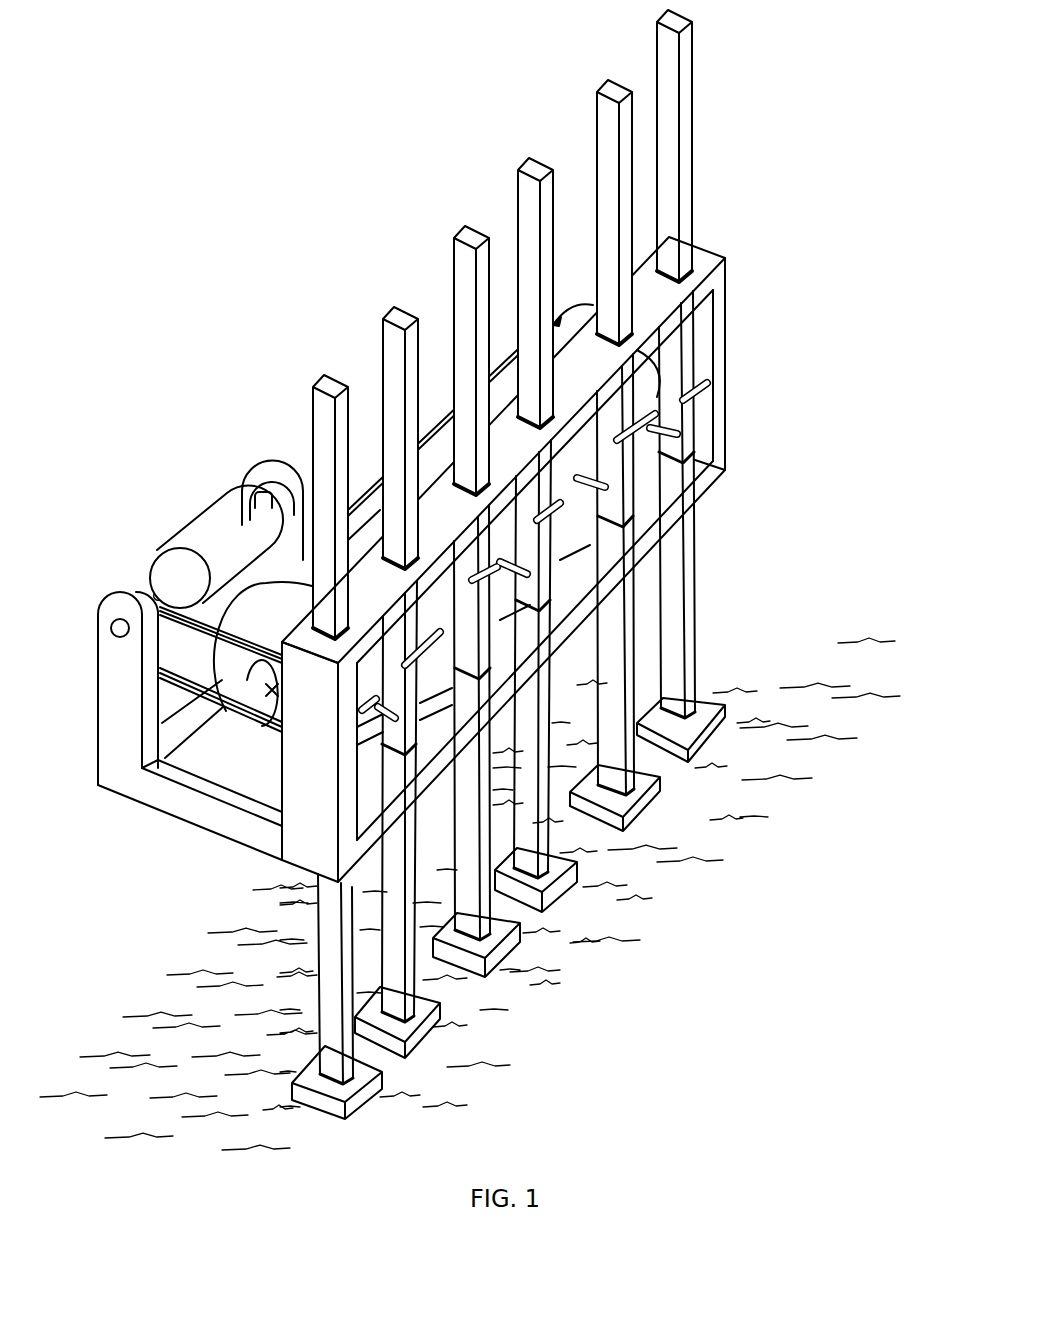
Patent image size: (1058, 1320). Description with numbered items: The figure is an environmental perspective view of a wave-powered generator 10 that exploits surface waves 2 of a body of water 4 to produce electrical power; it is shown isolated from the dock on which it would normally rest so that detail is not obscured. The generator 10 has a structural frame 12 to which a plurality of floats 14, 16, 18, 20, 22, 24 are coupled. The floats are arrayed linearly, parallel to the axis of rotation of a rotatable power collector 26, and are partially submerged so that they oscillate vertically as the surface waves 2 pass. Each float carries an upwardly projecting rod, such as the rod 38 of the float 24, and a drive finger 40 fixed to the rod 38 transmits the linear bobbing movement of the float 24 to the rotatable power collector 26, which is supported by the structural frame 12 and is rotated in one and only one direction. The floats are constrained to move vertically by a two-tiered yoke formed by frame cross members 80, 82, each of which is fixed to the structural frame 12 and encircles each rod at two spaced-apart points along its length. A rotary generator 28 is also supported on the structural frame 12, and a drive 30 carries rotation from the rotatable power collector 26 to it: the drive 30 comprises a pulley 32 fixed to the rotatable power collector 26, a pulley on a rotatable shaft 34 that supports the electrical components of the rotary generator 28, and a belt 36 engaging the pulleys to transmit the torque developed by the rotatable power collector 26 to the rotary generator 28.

The surface waves 2 is at (652, 897).
The body of water 4 is at (828, 538).
The generator 10 is at (338, 160).
The structural frame 12 is at (203, 681).
The float 14 is at (360, 1088).
The float 16 is at (430, 1023).
The float 18 is at (510, 945).
The float 20 is at (565, 885).
The float 22 is at (648, 799).
The float 24 is at (703, 387).
The rotatable power collector 26 is at (262, 747).
The rotary generator 28 is at (205, 522).
The drive 30 is at (175, 745).
The pulley 32 is at (270, 705).
The rotatable shaft 34 is at (160, 596).
The belt 36 is at (189, 630).
The rod 38 is at (688, 147).
The drive finger 40 is at (672, 466).
The frame cross member 80 is at (668, 297).
The frame cross member 82 is at (590, 556).